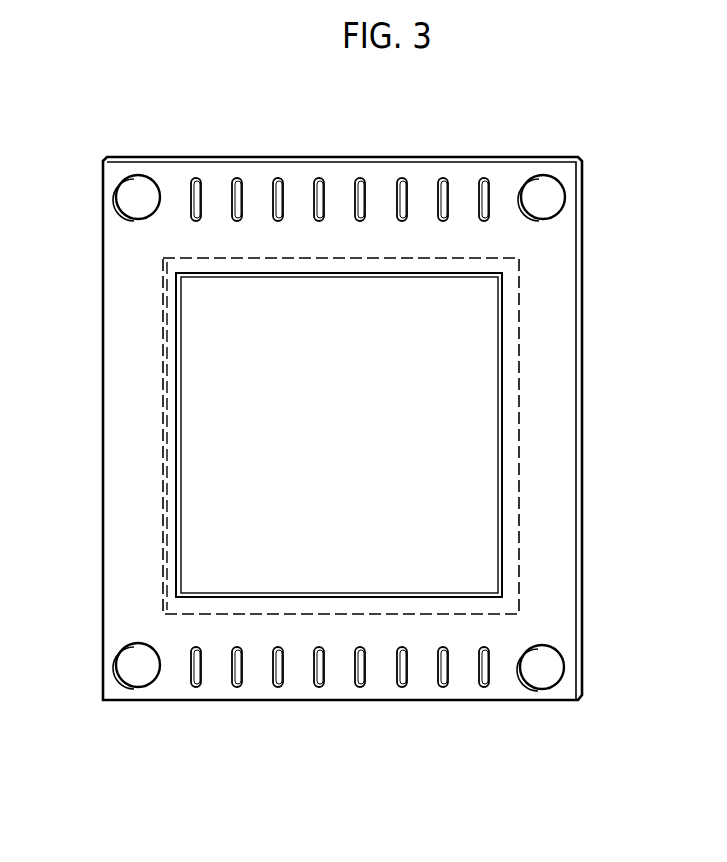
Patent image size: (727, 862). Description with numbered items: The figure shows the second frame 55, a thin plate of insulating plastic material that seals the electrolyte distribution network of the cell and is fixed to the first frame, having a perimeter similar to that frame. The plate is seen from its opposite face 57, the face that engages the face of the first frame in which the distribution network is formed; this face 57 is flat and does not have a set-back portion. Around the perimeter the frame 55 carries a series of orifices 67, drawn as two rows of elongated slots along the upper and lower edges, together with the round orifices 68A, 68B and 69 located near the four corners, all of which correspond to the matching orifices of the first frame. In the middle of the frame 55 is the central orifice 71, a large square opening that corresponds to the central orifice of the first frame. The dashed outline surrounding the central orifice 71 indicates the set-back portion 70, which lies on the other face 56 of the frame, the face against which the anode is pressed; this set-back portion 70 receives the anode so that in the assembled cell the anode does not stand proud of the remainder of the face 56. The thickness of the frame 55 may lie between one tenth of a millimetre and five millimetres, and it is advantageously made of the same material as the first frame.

The second frame 55 is at (221, 153).
The face 56 is at (121, 548).
The opposite face 57 is at (130, 404).
The orifices 67 is at (279, 190).
The orifice 68A is at (550, 204).
The orifice 68B is at (135, 663).
The orifices 69 is at (135, 199).
The set-back portion 70 is at (164, 443).
The central orifice 71 is at (369, 575).